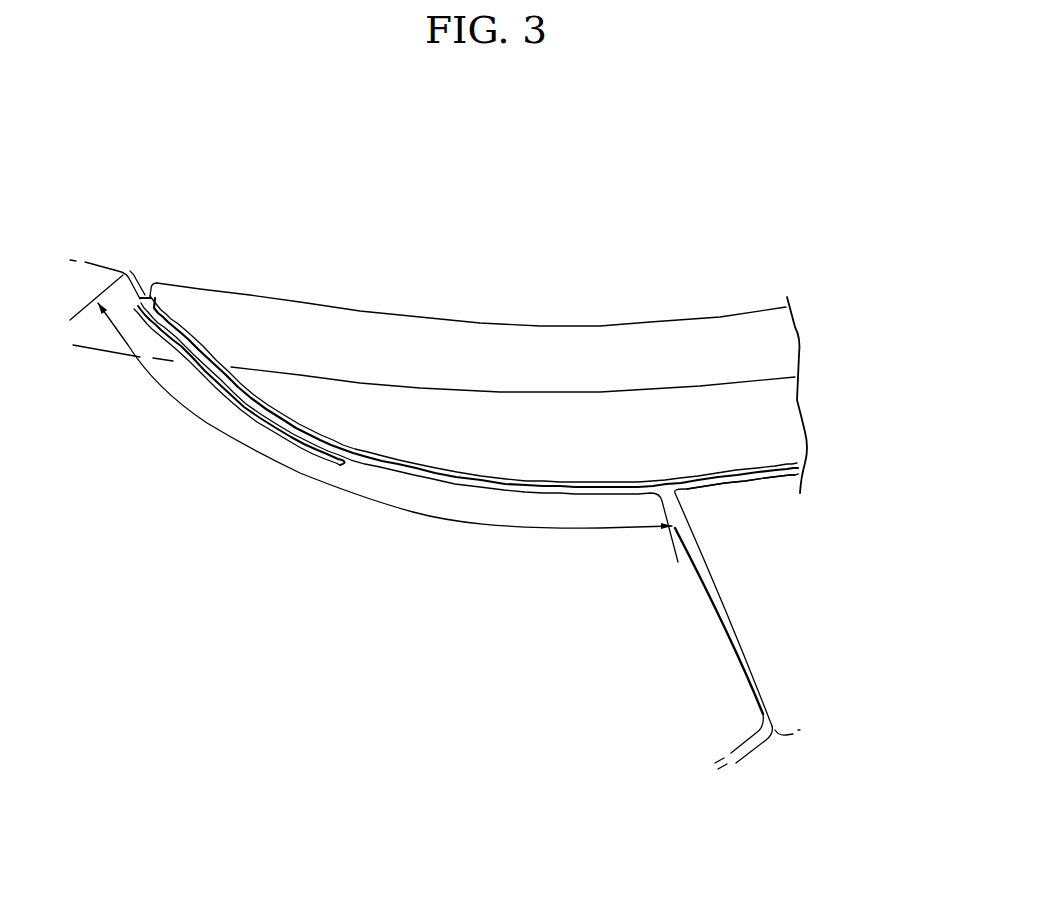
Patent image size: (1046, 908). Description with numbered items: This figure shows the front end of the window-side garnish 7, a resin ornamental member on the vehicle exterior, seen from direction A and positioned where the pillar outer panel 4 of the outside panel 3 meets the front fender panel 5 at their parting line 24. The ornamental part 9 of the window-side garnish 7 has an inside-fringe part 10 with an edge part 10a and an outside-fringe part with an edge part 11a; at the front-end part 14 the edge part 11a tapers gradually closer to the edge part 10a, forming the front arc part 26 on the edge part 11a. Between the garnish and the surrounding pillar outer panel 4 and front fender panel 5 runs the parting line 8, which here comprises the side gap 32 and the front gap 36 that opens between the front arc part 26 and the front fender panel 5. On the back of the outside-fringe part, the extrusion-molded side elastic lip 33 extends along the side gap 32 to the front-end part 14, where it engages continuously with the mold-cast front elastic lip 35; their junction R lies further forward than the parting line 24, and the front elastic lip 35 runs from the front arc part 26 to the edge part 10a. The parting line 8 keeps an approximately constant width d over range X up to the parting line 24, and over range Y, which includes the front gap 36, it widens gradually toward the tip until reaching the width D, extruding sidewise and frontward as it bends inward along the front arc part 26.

The edge part of the inside-fringe part 10a is at (228, 291).
The inside-fringe part 10 is at (474, 387).
The front-end part 14 is at (434, 301).
The ornamental part 9 is at (420, 328).
The window-side garnish 7 is at (683, 330).
The front gap 36 is at (212, 396).
The parting line 8 is at (212, 396).
The front elastic lip 35 is at (200, 373).
The front arc part 26 is at (220, 397).
The edge part of the outside-fringe part 11a is at (305, 432).
The front fender panel 5 is at (408, 596).
The side gap 32 is at (810, 518).
The side elastic lip 33 is at (778, 473).
The pillar outer panel 4 is at (778, 621).
The outside panel 3 is at (778, 621).
The parting line between the pillar outer panel and the front fender panel 24 is at (765, 690).